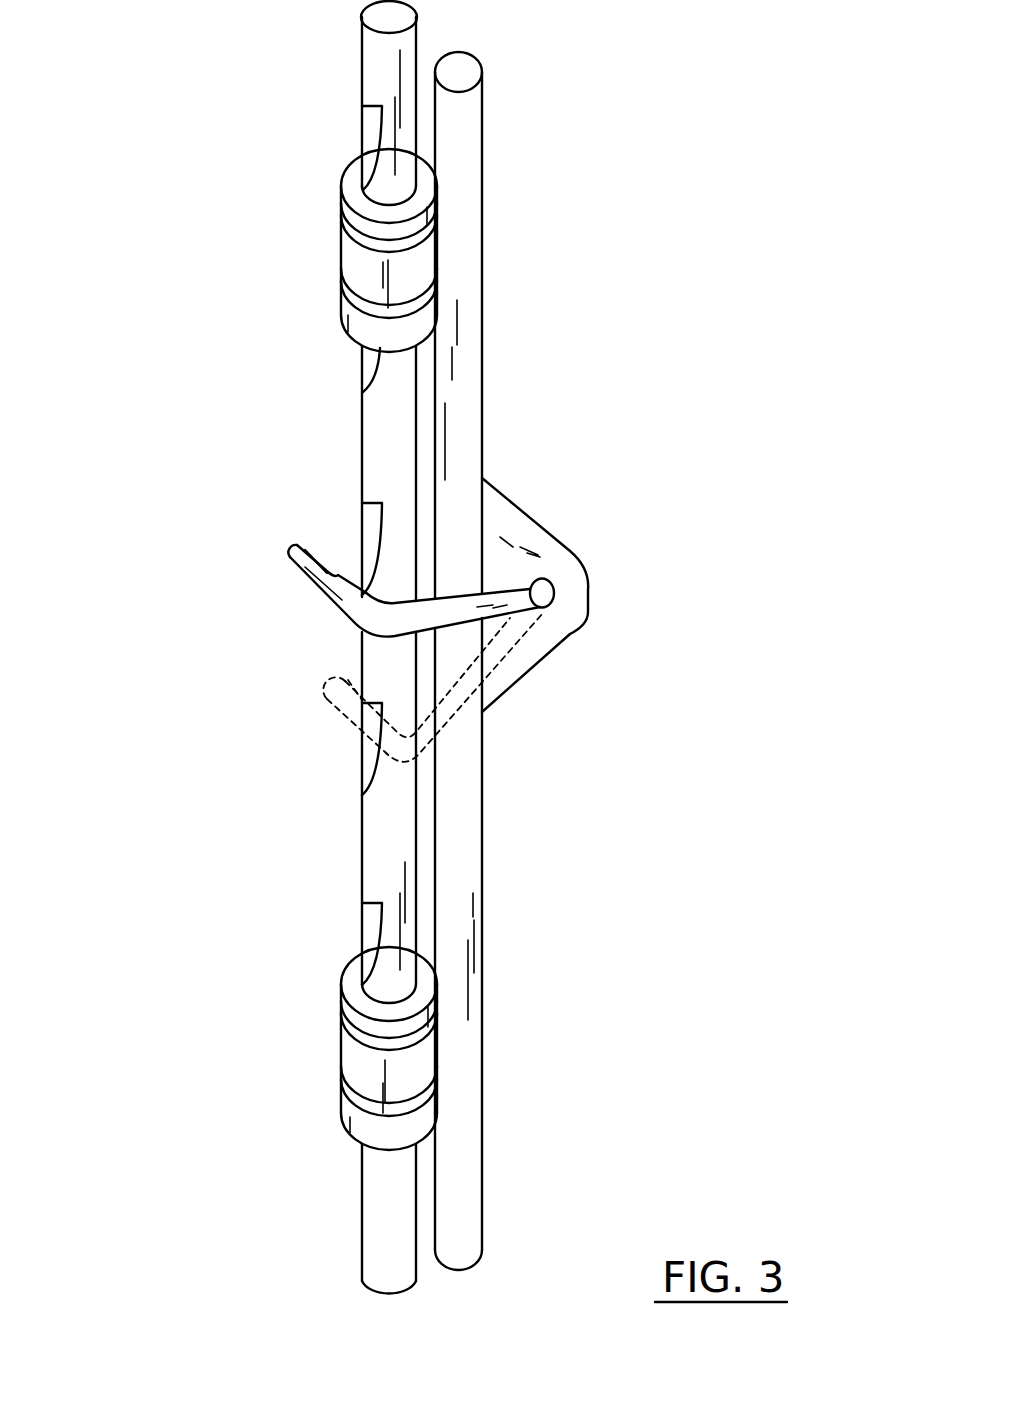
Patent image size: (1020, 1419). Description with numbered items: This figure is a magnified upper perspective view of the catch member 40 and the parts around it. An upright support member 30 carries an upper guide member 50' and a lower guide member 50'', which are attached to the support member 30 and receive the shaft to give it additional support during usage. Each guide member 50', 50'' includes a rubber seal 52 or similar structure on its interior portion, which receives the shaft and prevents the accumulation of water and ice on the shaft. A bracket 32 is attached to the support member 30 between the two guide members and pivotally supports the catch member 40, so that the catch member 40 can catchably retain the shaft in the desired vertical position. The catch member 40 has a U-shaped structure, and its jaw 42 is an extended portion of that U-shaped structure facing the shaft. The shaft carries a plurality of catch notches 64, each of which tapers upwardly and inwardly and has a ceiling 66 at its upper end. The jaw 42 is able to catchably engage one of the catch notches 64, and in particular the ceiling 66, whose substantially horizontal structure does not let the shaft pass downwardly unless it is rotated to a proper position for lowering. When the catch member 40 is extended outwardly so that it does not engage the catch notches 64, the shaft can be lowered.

The support member 30 is at (465, 226).
The bracket 32 is at (512, 522).
The catch member 40 is at (540, 597).
The jaw 42 is at (303, 542).
The upper guide member 50' is at (311, 250).
The lower guide member 50'' is at (308, 1048).
The rubber seal 52 is at (367, 315).
The catch notch 64 is at (370, 931).
The ceiling 66 is at (362, 107).